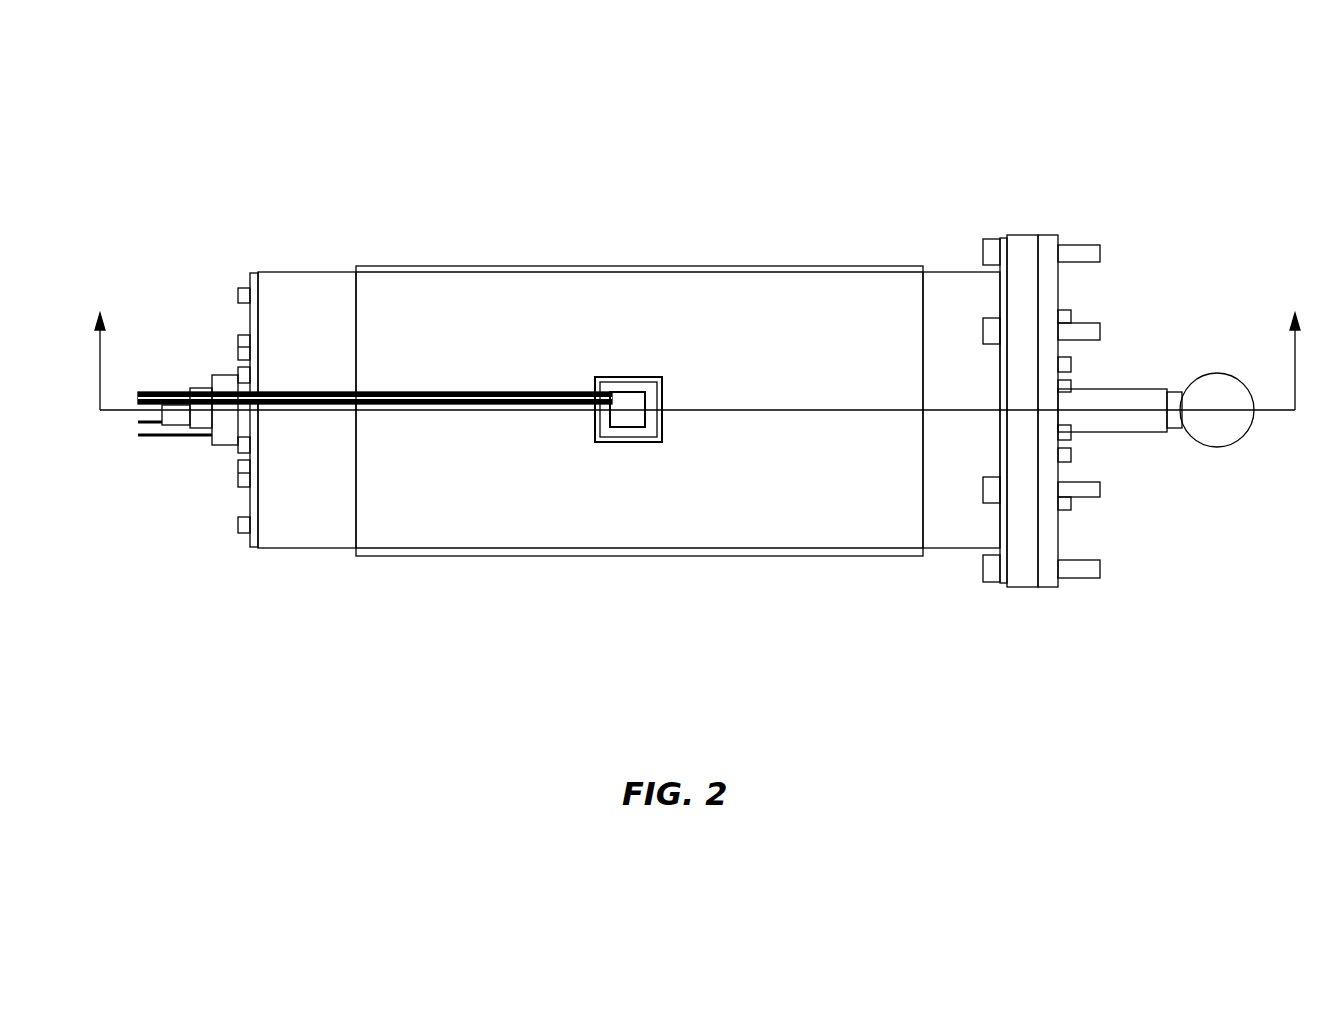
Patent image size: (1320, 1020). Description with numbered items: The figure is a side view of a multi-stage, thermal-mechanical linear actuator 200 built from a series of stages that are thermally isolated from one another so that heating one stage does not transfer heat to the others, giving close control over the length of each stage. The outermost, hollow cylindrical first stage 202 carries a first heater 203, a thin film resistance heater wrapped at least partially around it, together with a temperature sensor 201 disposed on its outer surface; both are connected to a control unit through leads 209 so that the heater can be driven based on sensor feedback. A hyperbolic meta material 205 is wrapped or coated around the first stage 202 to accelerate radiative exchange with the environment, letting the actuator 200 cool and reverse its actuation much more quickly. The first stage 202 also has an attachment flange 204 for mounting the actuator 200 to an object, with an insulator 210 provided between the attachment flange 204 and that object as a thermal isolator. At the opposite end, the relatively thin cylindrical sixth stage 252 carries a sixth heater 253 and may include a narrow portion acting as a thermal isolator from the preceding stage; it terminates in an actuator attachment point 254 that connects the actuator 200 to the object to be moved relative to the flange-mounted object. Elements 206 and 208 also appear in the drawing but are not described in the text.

The multi-stage thermal-mechanical linear actuator 200 is at (227, 187).
The temperature sensor 201 is at (630, 420).
The first stage 202 is at (707, 303).
The first heater 203 is at (300, 527).
The attachment flange 204 is at (1022, 573).
The hyperbolic meta material 205 is at (525, 465).
The fasteners 206 is at (1058, 292).
The flange 208 is at (253, 500).
The leads 209 is at (310, 392).
The insulator 210 is at (1048, 253).
The sixth stage 252 is at (1175, 422).
The sixth heater 253 is at (1103, 425).
The actuator attachment point 254 is at (1235, 428).